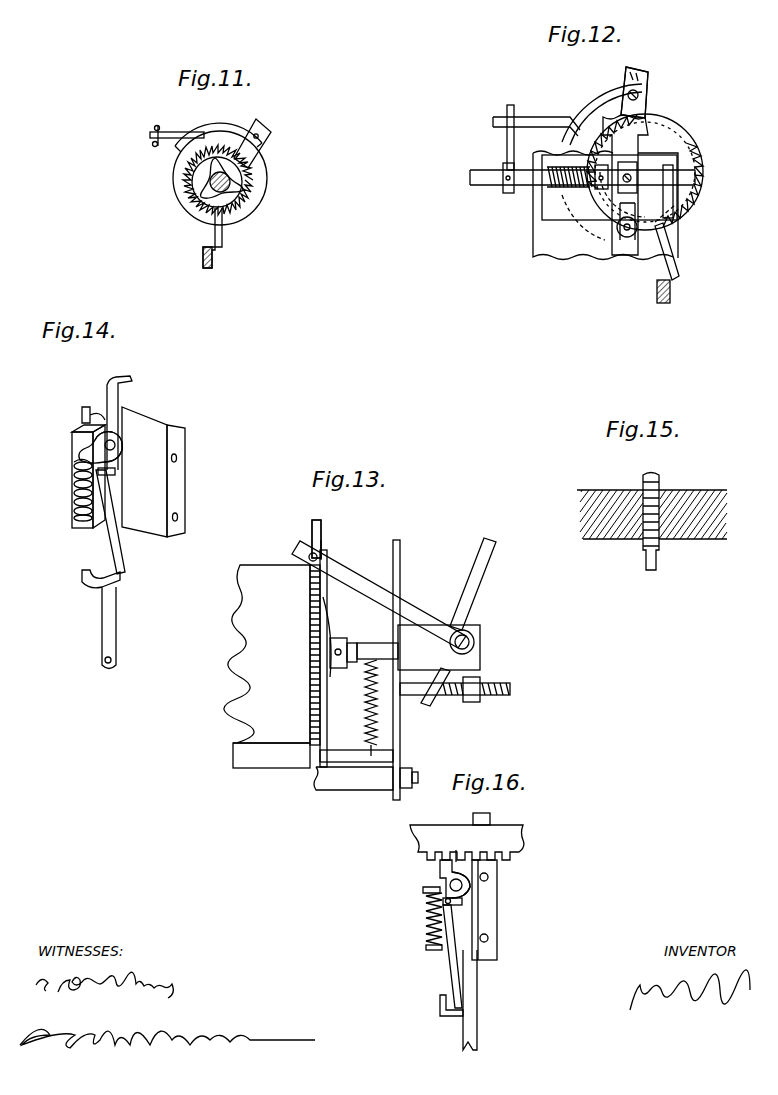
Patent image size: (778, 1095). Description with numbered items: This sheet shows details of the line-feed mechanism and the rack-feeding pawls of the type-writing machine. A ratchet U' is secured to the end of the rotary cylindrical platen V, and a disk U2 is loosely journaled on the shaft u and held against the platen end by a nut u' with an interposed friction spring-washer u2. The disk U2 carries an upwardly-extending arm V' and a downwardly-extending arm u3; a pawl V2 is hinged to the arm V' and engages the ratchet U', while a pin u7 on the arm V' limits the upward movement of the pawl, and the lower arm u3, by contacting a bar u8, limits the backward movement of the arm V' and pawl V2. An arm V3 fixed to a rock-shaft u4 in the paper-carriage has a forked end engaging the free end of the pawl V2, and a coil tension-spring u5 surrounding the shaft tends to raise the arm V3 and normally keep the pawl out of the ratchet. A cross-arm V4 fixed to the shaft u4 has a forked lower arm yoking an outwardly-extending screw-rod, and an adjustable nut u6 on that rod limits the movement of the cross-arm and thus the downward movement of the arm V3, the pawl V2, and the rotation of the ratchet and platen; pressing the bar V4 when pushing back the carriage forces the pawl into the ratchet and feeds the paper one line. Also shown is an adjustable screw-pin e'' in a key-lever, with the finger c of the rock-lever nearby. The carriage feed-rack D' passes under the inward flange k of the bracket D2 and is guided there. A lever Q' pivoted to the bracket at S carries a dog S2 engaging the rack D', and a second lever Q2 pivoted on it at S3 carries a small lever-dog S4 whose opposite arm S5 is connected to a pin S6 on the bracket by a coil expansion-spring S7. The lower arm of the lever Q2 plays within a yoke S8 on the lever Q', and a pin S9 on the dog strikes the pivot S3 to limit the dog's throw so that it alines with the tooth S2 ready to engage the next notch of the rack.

In FIG. 11, the platen V is at (235, 178).
In FIG. 12, the platen V is at (605, 187).
In FIG. 13, the platen V is at (267, 666).
In FIG. 11, the upwardly-extending arm V' is at (265, 137).
In FIG. 12, the upwardly-extending arm V' is at (654, 92).
In FIG. 13, the upwardly-extending arm V' is at (311, 528).
In FIG. 11, the pawl V2 is at (230, 122).
In FIG. 12, the pawl V2 is at (581, 100).
In FIG. 13, the pawl V2 is at (322, 545).
In FIG. 11, the forked arm V3 is at (155, 142).
In FIG. 12, the forked arm V3 is at (505, 138).
In FIG. 13, the forked arm V3 is at (360, 578).
In FIG. 13, the cross-arm V4 is at (470, 572).
In FIG. 11, the ratchet U' is at (192, 182).
In FIG. 12, the ratchet U' is at (657, 172).
In FIG. 13, the ratchet U' is at (288, 680).
In FIG. 11, the disk U2 is at (232, 196).
In FIG. 12, the disk U2 is at (652, 147).
In FIG. 13, the disk U2 is at (324, 600).
In FIG. 11, the shaft u is at (190, 194).
In FIG. 13, the nut u' is at (351, 644).
In FIG. 11, the friction spring-washer u2 is at (238, 172).
In FIG. 13, the friction spring-washer u2 is at (328, 678).
In FIG. 11, the downwardly-extending arm u3 is at (212, 236).
In FIG. 12, the downwardly-extending arm u3 is at (675, 268).
In FIG. 13, the downwardly-extending arm u3 is at (318, 760).
In FIG. 12, the rock-shaft u4 is at (524, 184).
In FIG. 13, the rock-shaft u4 is at (480, 640).
In FIG. 12, the coil tension-spring u5 is at (560, 188).
In FIG. 13, the coil tension-spring u5 is at (438, 700).
In FIG. 12, the adjustable nut u6 is at (620, 233).
In FIG. 13, the adjustable nut u6 is at (474, 702).
In FIG. 12, the pin u7 is at (645, 75).
In FIG. 13, the pin u7 is at (312, 530).
In FIG. 12, the bar u8 is at (670, 295).
In FIG. 13, the bar u8 is at (368, 782).
In FIG. 14, the inward flange k is at (130, 378).
In FIG. 16, the inward flange k is at (490, 818).
In FIG. 16, the carriage feed-rack D' is at (483, 841).
In FIG. 14, the bracket D2 is at (185, 474).
In FIG. 16, the bracket D2 is at (497, 868).
In FIG. 14, the pivot S is at (86, 490).
In FIG. 16, the pivot S is at (455, 908).
In FIG. 14, the dog S2 is at (82, 409).
In FIG. 16, the dog S2 is at (457, 850).
In FIG. 14, the pivot S3 is at (115, 471).
In FIG. 16, the pivot S3 is at (458, 904).
In FIG. 14, the lever-dog S4 is at (82, 418).
In FIG. 16, the lever-dog S4 is at (444, 868).
In FIG. 14, the opposite arm S5 is at (80, 464).
In FIG. 16, the opposite arm S5 is at (428, 893).
In FIG. 14, the pin S6 is at (72, 527).
In FIG. 16, the pin S6 is at (430, 950).
In FIG. 14, the coil expansion-spring S7 is at (76, 493).
In FIG. 16, the coil expansion-spring S7 is at (432, 920).
In FIG. 14, the yoke S8 is at (82, 580).
In FIG. 16, the yoke S8 is at (440, 1008).
In FIG. 14, the pin S9 is at (120, 450).
In FIG. 16, the pin S9 is at (462, 898).
In FIG. 14, the lever Q' is at (122, 628).
In FIG. 16, the lever Q' is at (484, 1000).
In FIG. 14, the lever Q2 is at (122, 548).
In FIG. 16, the lever Q2 is at (455, 990).
In FIG. 15, the finger c is at (652, 497).
In FIG. 15, the adjustable screw-pin e'' is at (671, 513).